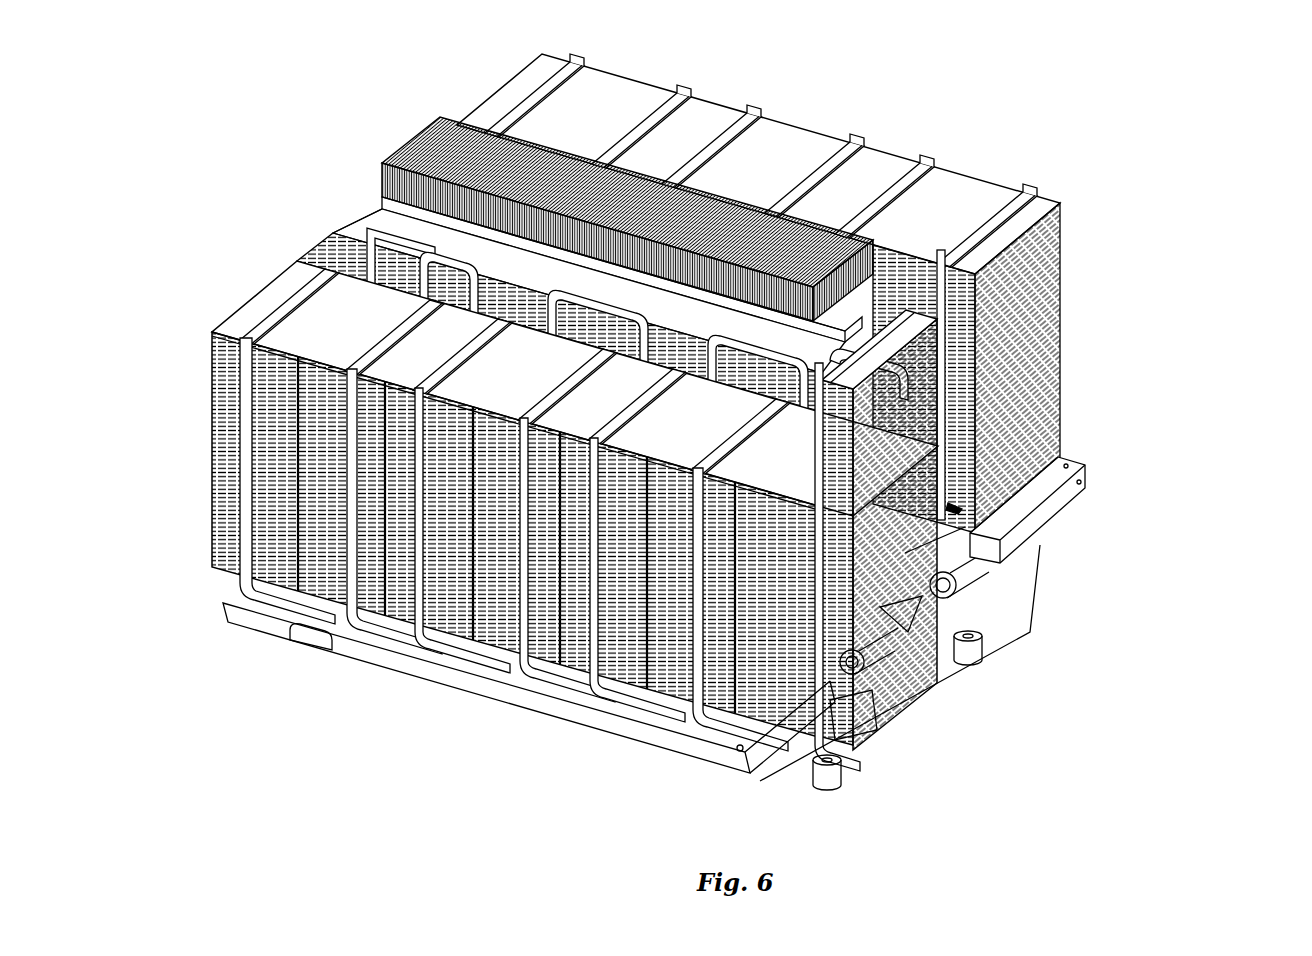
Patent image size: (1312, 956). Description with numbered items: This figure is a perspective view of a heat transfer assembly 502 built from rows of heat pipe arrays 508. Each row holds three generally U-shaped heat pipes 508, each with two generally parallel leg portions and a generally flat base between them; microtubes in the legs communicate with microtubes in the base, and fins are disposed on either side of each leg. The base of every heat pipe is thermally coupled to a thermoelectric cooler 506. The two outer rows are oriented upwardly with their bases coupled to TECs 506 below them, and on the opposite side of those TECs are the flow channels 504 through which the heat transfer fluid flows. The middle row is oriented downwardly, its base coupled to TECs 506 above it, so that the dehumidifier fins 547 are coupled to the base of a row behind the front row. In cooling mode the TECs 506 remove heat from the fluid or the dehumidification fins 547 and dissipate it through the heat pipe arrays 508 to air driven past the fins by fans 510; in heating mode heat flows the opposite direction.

The heat transfer assembly 502 is at (1047, 84).
The dehumidifier fins 547 is at (380, 169).
The thermoelectric cooler 506 is at (950, 503).
The heat pipe arrays 508 is at (548, 684).
The fans 510 is at (750, 712).
The flow channels 504 is at (840, 753).